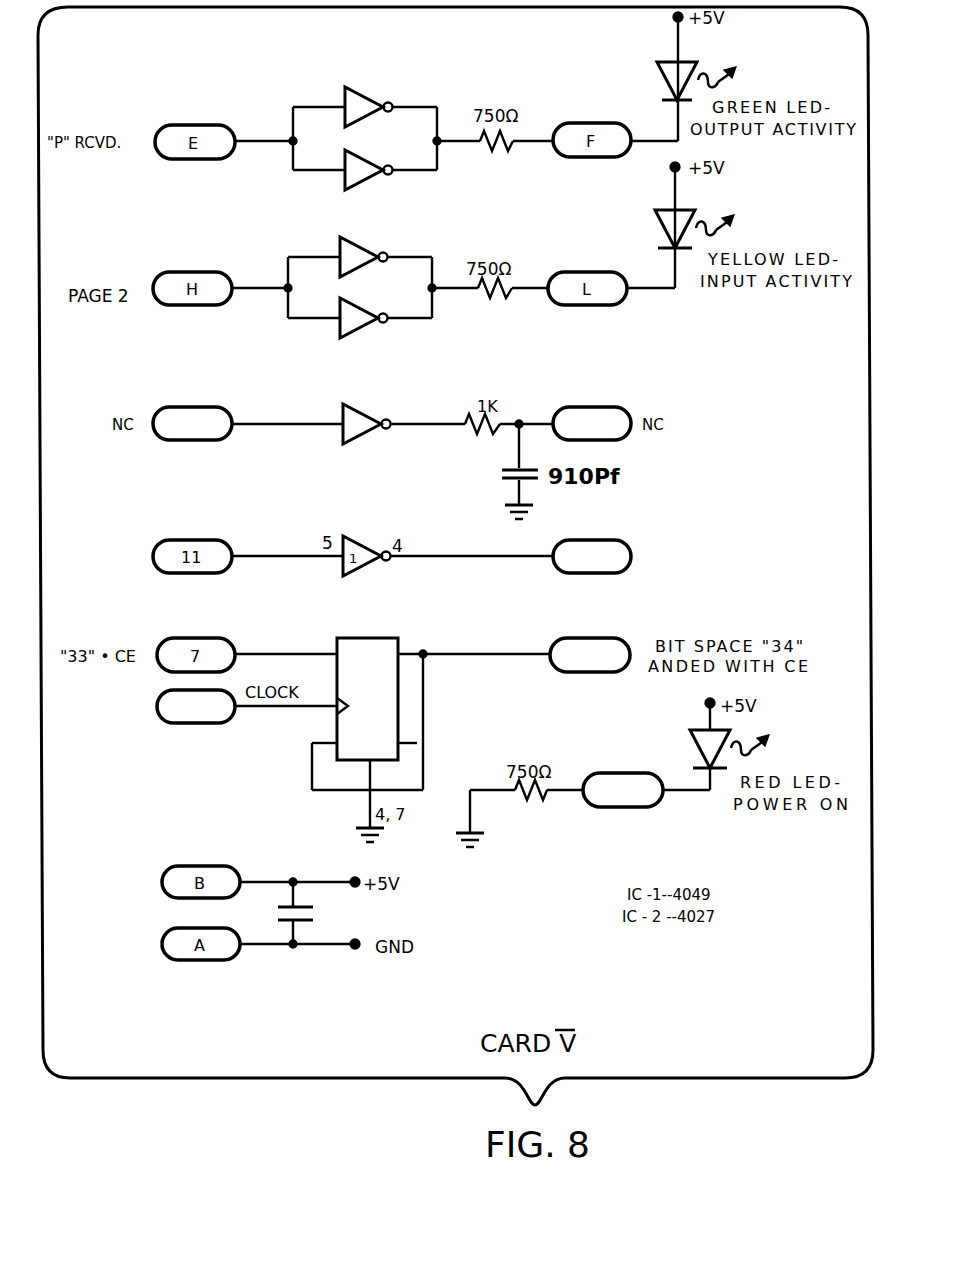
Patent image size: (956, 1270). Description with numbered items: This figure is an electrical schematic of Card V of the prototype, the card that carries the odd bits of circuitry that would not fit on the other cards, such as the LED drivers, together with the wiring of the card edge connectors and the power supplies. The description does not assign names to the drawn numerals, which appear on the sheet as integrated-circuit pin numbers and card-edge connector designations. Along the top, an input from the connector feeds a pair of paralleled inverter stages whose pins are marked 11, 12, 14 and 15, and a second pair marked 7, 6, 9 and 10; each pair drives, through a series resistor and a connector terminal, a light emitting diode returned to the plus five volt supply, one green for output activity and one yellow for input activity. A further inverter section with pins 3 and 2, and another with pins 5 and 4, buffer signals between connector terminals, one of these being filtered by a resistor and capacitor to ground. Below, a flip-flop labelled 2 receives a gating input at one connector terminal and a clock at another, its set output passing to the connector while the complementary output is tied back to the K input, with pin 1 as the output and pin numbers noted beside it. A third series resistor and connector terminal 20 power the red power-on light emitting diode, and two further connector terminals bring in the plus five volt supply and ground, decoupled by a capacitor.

The IC-1 inverter (4049) 1 is at (364, 421).
The IC-2 JK flip-flop (4027) 2 is at (365, 696).
The connector pin 3 (NC) 3 is at (192, 423).
The connector pin 4 (NC) 4 is at (592, 423).
The connector pin 5 (clock) 5 is at (196, 706).
The connector pin 6 (bit space 34 anded with CE) 6 is at (590, 655).
The inverter input pin 7 is at (353, 250).
The inverter input pin 9 is at (346, 316).
The inverter output pin 10 is at (402, 306).
The inverter input pin 11 is at (357, 101).
The connector pin 12 is at (592, 556).
The inverter input pin 14 is at (350, 167).
The inverter output pin 15 is at (405, 157).
The connector pin 20 (red LED power on) 20 is at (623, 790).